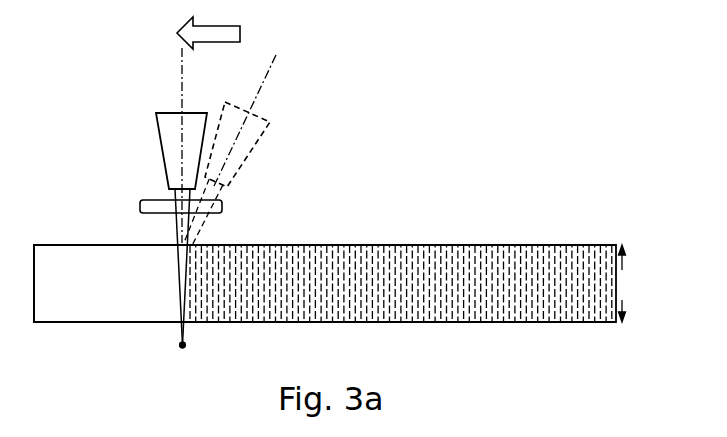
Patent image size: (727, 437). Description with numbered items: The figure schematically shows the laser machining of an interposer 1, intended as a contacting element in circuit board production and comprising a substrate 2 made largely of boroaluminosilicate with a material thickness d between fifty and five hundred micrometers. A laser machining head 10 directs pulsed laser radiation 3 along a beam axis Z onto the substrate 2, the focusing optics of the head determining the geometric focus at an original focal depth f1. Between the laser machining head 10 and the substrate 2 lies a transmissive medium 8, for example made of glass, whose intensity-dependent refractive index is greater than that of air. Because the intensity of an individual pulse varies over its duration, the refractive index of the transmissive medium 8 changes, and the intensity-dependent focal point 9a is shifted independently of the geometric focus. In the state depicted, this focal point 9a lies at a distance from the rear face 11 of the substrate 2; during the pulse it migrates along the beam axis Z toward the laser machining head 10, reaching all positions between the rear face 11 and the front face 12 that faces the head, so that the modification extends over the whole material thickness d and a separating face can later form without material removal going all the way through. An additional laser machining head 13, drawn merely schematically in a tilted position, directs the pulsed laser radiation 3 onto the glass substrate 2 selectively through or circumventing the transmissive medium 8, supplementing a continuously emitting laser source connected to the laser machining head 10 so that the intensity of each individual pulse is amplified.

The interposer 1 is at (325, 282).
The substrate 2 is at (85, 313).
The laser radiation 3 is at (199, 233).
The transmissive medium 8 is at (232, 203).
The intensity-dependent focal point 9a is at (186, 346).
The laser machining head 10 is at (147, 145).
The rear face 11 is at (447, 331).
The front face 12 is at (438, 236).
The additional laser machining head 13 is at (279, 113).
The beam axis Z is at (174, 81).
The material thickness d is at (625, 283).
The original focal depth f1 is at (168, 351).